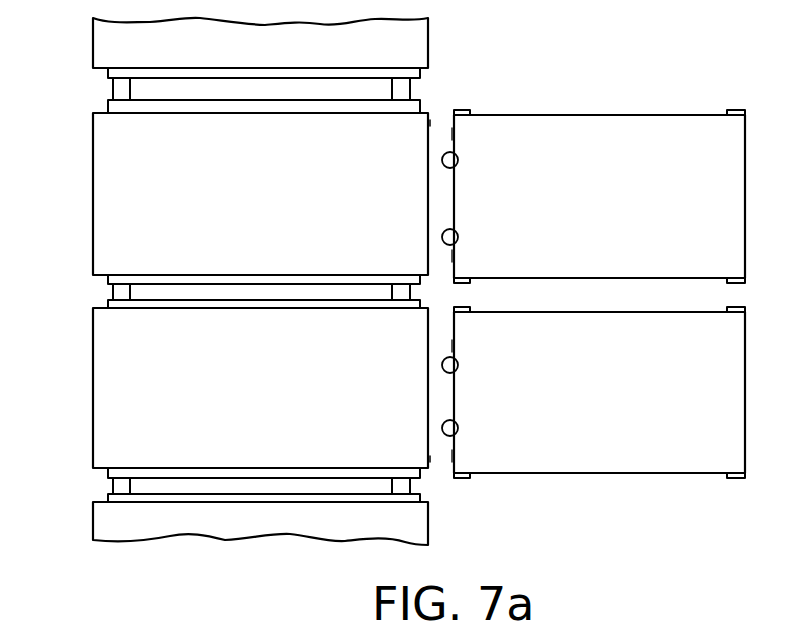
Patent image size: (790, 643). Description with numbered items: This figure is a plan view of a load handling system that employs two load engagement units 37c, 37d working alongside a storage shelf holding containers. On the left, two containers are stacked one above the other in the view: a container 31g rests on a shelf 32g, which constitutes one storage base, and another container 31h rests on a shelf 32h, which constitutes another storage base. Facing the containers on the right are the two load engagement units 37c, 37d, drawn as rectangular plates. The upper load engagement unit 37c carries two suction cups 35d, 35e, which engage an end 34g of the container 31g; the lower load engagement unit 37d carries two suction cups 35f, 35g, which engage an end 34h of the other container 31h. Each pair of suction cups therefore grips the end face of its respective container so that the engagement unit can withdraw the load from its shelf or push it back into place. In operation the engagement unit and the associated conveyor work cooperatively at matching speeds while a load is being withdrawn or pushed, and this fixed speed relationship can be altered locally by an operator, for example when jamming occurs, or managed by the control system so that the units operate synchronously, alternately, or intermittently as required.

The container 31g is at (100, 175).
The container 31h is at (107, 375).
The shelf 32g is at (110, 103).
The shelf 32h is at (110, 300).
The end of container 34g is at (432, 127).
The end of container 34h is at (431, 461).
The suction cup 35d is at (455, 170).
The suction cup 35e is at (455, 240).
The suction cup 35f is at (455, 378).
The suction cup 35g is at (455, 420).
The load engagement unit 37c is at (655, 128).
The load engagement unit 37d is at (641, 462).